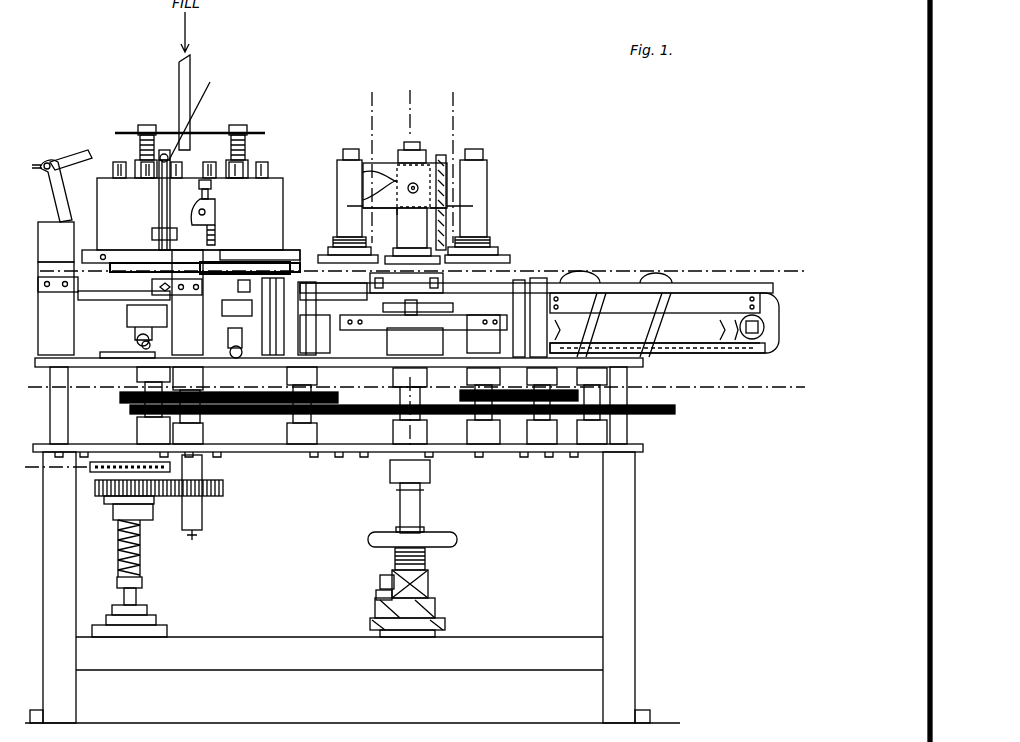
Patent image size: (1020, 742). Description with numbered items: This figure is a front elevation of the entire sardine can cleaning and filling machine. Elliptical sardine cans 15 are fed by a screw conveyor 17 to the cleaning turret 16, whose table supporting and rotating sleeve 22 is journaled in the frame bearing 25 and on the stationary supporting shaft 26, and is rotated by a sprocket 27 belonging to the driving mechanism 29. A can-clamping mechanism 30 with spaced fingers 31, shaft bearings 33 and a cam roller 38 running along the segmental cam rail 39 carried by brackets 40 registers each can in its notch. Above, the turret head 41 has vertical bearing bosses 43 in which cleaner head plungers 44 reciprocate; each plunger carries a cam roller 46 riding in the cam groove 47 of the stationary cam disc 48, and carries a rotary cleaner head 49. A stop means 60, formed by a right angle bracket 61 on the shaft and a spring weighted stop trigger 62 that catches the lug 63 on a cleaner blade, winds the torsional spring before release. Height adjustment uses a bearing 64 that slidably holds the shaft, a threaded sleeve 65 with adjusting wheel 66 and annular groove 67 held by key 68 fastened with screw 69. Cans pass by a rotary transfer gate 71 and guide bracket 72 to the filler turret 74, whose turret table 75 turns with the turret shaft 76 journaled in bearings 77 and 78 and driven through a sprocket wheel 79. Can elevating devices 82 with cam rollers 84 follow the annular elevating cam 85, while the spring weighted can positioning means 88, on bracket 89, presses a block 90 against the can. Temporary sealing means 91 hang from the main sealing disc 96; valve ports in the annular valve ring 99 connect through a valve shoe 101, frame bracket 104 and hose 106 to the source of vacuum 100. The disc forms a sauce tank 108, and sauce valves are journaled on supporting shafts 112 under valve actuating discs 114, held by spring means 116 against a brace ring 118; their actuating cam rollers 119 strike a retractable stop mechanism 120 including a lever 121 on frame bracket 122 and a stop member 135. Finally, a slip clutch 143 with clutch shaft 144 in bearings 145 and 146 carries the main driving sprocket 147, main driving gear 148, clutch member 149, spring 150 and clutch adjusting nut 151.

The elliptical sardine cans 15 is at (468, 270).
The cleaning turret 16 is at (508, 285).
The screw conveyor 17 is at (773, 293).
The table supporting and rotating sleeve 22 is at (420, 395).
The frame bearing 25 is at (398, 335).
The stationary supporting shaft 26 is at (420, 512).
The sprocket 27 is at (362, 415).
The driving mechanism 29 is at (678, 420).
The can-clamping mechanism 30 is at (405, 308).
The clamping fingers 31 is at (406, 283).
The bearings 33 is at (415, 341).
The cam roller 38 is at (410, 326).
The segmental cam rail 39 is at (443, 331).
The brackets 40 is at (348, 345).
The turret head 41 is at (504, 154).
The vertical bearing bosses 43 is at (337, 165).
The cleaner head plunger 44 is at (350, 149).
The cam roller 46 is at (363, 176).
The cam groove 47 is at (363, 200).
The stationary cam disc 48 is at (385, 168).
The cleaner head 49 is at (323, 246).
The stop means 60 is at (456, 203).
The right angle bracket 61 is at (437, 158).
The stop trigger 62 is at (455, 255).
The lug 63 is at (505, 280).
The bearing 64 is at (440, 620).
The threaded sleeve 65 is at (428, 566).
The adjusting wheel 66 is at (370, 540).
The annular groove 67 is at (430, 585).
The key 68 is at (380, 580).
The screw 69 is at (376, 597).
The rotary transfer gate 71 is at (275, 274).
The guide bracket 72 is at (333, 290).
The filler turret 74 is at (103, 296).
The turret table 75 is at (120, 310).
The turret shaft 76 is at (192, 507).
The bearing 77 is at (203, 380).
The bearing 78 is at (200, 438).
The sprocket wheel 79 is at (228, 417).
The can elevating devices 82 is at (133, 337).
The cam roller 84 is at (145, 348).
The annular elevating cam 85 is at (230, 355).
The can positioning means 88 is at (243, 280).
The bracket 89 is at (275, 340).
The spring weighted block 90 is at (237, 312).
The temporary sealing means 91 is at (190, 214).
The main sealing disc 96 is at (115, 250).
The annular valve ring 99 is at (293, 278).
The source of vacuum 100 is at (222, 191).
The valve shoe 101 is at (222, 248).
The frame bracket 104 is at (210, 212).
The hose 106 is at (200, 186).
The tank 108 is at (283, 175).
The supporting shaft 112 is at (230, 140).
The valve actuating disc 114 is at (222, 133).
The spring means 116 is at (238, 150).
The brace ring 118 is at (165, 150).
The actuating cam rollers 119 is at (118, 160).
The retractable stop mechanism 120 is at (151, 193).
The lever 121 is at (142, 268).
The frame bracket 122 is at (60, 296).
The stop member 135 is at (193, 117).
The slip clutch 143 is at (108, 513).
The clutch shaft 144 is at (128, 540).
The bearing 145 is at (125, 445).
The bearing 146 is at (142, 612).
The main driving sprocket 147 is at (90, 477).
The main driving gear 148 is at (95, 492).
The clutch member 149 is at (142, 510).
The spring 150 is at (140, 555).
The clutch adjusting nut 151 is at (142, 585).